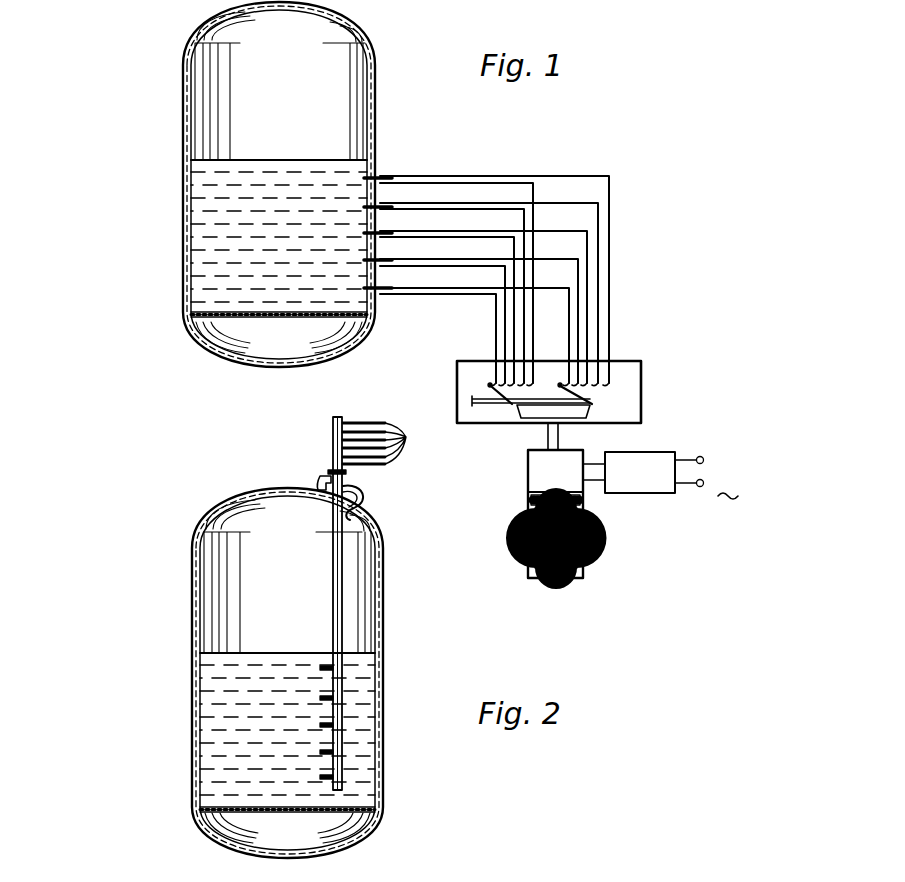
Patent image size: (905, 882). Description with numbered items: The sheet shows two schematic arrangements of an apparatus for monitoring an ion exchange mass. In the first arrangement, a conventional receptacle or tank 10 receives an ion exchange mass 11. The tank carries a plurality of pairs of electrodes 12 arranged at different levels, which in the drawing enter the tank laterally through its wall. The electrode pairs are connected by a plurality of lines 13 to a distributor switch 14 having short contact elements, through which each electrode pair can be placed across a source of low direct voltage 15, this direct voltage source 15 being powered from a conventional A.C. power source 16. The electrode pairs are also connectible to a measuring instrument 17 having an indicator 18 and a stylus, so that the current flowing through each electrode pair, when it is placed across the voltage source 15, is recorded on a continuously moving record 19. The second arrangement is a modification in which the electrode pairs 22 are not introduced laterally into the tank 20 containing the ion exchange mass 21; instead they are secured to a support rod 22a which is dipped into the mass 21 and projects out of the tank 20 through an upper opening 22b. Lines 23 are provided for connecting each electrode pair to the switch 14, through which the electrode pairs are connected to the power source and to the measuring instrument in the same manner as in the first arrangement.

In FIG. 1, the tank 10 is at (183, 122).
In FIG. 1, the ion exchange mass 11 is at (190, 220).
In FIG. 1, the pairs of electrodes 12 is at (370, 180).
In FIG. 1, the lines 13 is at (474, 290).
In FIG. 1, the distributor switch 14 is at (628, 394).
In FIG. 1, the direct voltage source 15 is at (637, 452).
In FIG. 1, the A.C. power source 16 is at (704, 458).
In FIG. 1, the measuring instrument 17 is at (578, 549).
In FIG. 1, the indicator 18 is at (536, 498).
In FIG. 1, the continuously moving record 19 is at (550, 568).
In FIG. 2, the tank 20 is at (193, 627).
In FIG. 2, the ion exchange mass 21 is at (365, 779).
In FIG. 2, the electrode pairs 22 is at (390, 714).
In FIG. 2, the support rod 22a is at (343, 584).
In FIG. 2, the upper opening 22b is at (352, 490).
In FIG. 2, the lines 23 is at (390, 443).